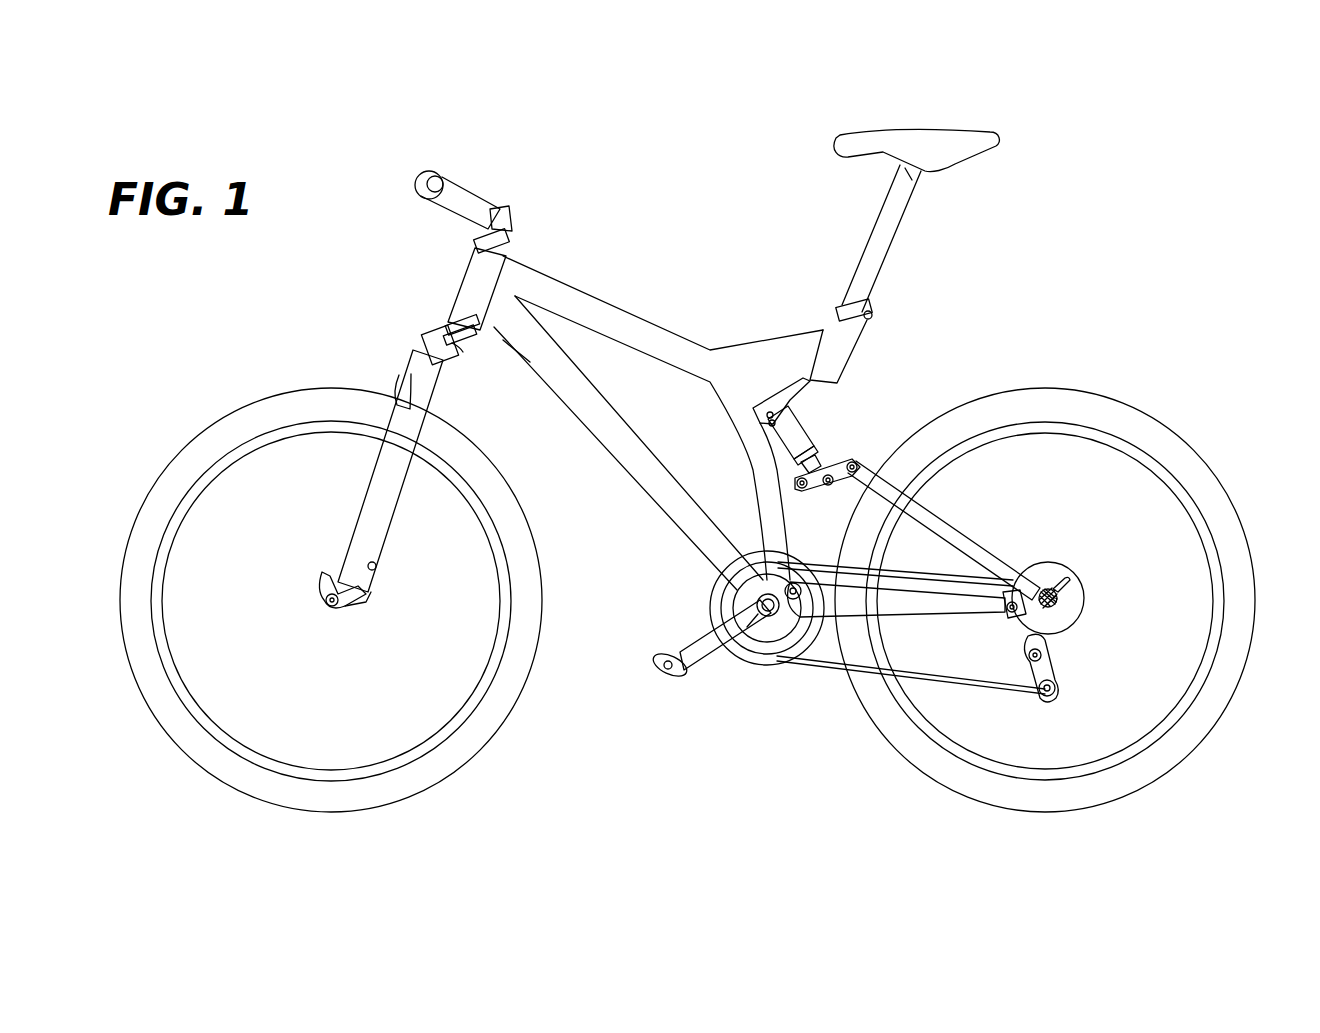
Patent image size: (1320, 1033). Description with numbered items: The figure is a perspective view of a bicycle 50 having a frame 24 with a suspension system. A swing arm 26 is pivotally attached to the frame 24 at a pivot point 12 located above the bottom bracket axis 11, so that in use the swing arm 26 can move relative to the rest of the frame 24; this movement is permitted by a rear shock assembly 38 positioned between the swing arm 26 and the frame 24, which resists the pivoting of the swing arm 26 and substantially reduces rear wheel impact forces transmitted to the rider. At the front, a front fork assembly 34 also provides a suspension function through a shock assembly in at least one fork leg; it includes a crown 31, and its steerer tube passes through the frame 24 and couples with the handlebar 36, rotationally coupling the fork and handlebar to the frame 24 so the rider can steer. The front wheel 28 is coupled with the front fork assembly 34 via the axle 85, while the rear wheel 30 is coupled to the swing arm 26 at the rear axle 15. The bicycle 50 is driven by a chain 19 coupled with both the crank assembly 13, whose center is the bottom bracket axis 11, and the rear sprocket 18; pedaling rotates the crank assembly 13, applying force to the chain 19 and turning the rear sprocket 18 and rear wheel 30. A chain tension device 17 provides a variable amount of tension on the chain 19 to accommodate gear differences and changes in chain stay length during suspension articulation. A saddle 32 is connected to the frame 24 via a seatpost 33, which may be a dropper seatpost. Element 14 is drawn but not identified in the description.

The bicycle 50 is at (718, 78).
The saddle 32 is at (928, 130).
The seatpost 33 is at (906, 217).
The handlebar 36 is at (425, 173).
The crown 31 is at (433, 345).
The frame 24 is at (633, 312).
The front wheel 28 is at (237, 403).
The rear wheel 30 is at (1214, 467).
The front fork assembly 34 is at (371, 512).
The axle 85 is at (334, 608).
The swing arm 26 is at (946, 522).
The rear shock assembly 38 is at (815, 437).
The crank assembly 13 is at (714, 612).
The bottom bracket axis 11 is at (757, 616).
The pivot point 12 is at (763, 617).
The pedal 14 is at (698, 672).
The rear sprocket 18 is at (1068, 592).
The rear axle 15 is at (1058, 668).
The chain tension device 17 is at (1056, 698).
The chain 19 is at (990, 700).